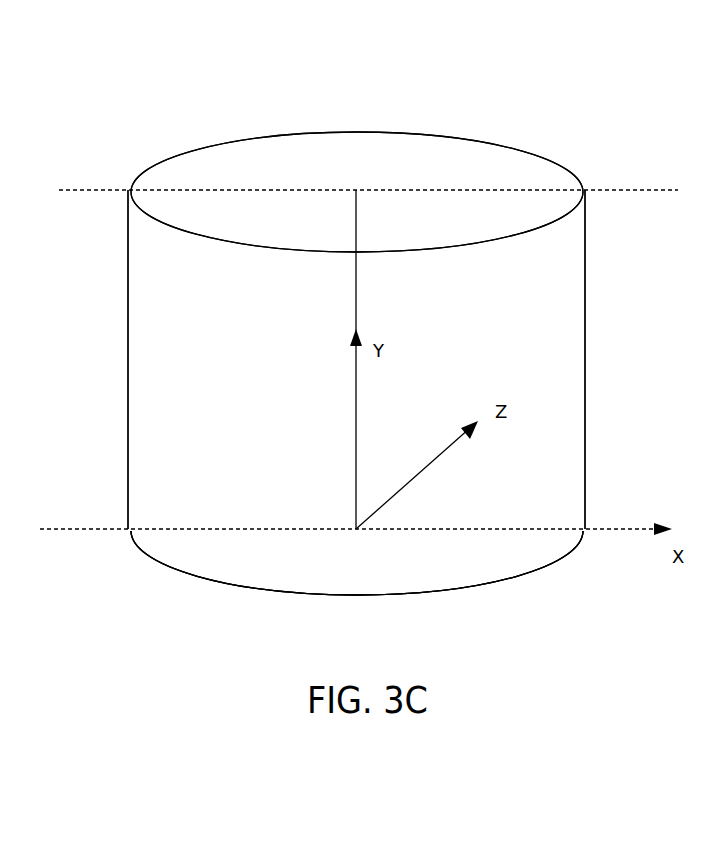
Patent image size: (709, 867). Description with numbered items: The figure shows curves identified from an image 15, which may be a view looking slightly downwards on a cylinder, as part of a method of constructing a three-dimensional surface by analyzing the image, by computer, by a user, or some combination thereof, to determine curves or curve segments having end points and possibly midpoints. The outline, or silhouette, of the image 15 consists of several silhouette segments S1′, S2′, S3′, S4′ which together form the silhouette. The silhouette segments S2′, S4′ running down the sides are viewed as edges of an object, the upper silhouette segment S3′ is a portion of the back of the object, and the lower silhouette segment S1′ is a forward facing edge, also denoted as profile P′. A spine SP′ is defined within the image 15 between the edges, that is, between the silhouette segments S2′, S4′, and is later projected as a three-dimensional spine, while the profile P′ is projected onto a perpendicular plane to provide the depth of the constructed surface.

The image 15 is at (246, 70).
The silhouette segment S3′ is at (215, 145).
The silhouette segment S2′ is at (128, 378).
The silhouette segment S4′ is at (588, 365).
The spine SP′ is at (354, 305).
The profile P′ is at (133, 546).
The silhouette segment S1′ is at (133, 546).